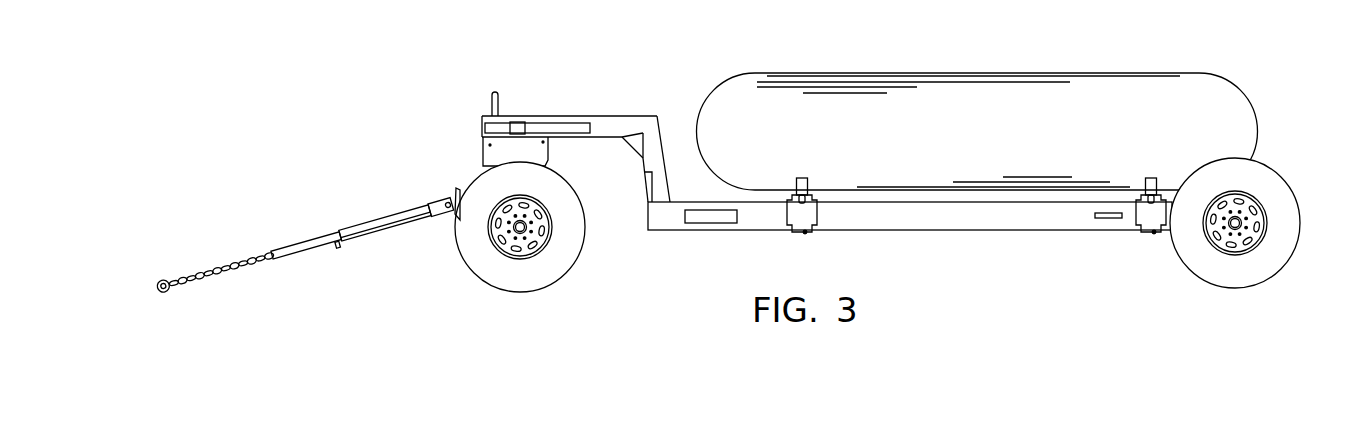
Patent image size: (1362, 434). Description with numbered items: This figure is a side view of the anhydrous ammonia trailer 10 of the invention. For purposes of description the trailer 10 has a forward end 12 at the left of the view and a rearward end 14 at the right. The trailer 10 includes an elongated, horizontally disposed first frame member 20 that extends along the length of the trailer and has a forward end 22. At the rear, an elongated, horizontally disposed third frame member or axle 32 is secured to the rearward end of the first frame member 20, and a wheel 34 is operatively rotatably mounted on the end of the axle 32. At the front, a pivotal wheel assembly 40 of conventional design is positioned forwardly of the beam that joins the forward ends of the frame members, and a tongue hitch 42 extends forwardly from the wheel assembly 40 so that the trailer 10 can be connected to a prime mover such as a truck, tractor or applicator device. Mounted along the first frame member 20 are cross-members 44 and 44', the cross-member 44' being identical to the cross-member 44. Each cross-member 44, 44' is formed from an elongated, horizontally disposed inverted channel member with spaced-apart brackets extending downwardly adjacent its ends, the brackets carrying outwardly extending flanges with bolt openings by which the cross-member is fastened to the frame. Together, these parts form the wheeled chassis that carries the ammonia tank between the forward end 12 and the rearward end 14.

The trailer 10 is at (655, 98).
The forward end 12 is at (389, 192).
The rearward end 14 is at (1287, 95).
The first frame member 20 is at (971, 213).
The forward end of first frame member 22 is at (643, 222).
The third frame member or axle 32 is at (1277, 200).
The wheel 34 is at (1260, 227).
The pivotal wheel assembly 40 is at (465, 173).
The tongue hitch 42 is at (328, 255).
The cross-member 44 is at (754, 231).
The cross-member 44' is at (1106, 237).